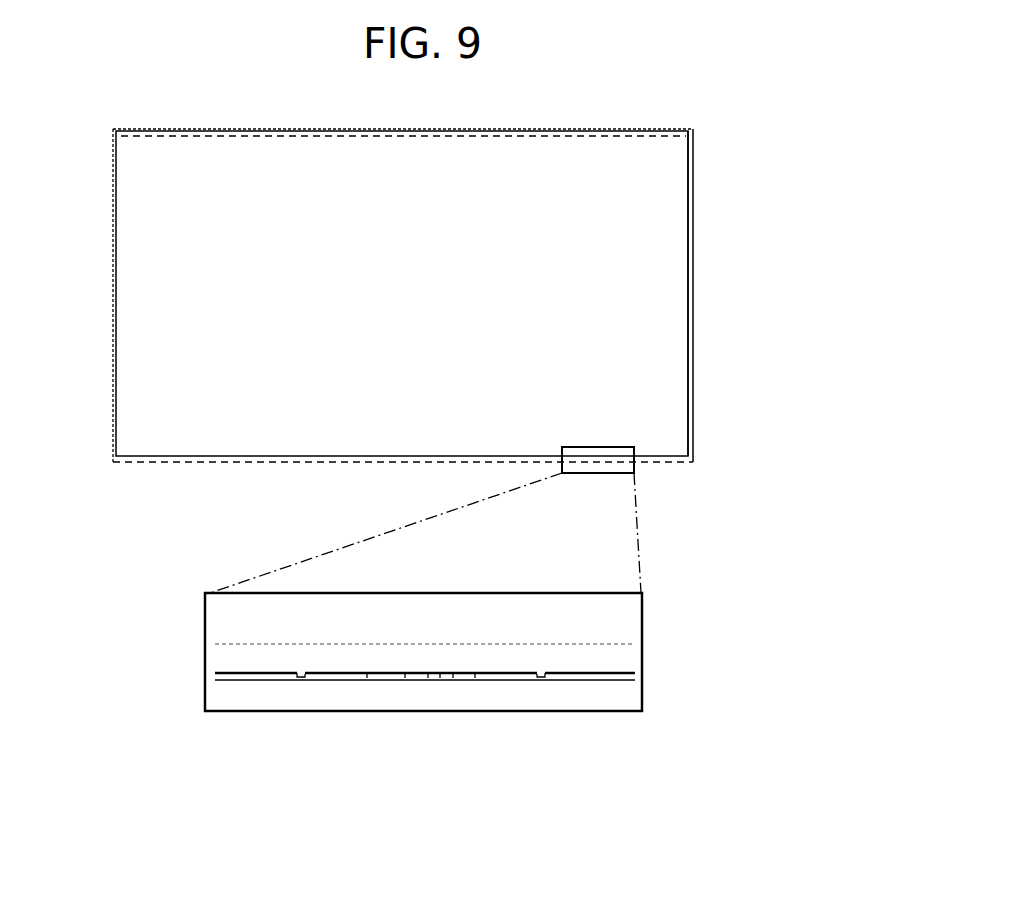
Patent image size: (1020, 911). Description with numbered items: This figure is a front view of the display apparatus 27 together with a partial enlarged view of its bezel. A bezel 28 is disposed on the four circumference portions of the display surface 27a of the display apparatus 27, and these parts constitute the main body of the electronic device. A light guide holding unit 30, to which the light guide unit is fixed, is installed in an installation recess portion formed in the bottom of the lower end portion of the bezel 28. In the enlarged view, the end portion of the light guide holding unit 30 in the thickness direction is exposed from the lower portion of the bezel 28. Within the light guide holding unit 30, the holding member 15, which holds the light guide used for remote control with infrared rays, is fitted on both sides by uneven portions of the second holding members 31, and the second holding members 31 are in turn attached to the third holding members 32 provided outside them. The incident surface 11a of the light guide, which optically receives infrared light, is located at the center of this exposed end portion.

The display apparatus 27 is at (599, 124).
The display surface 27a is at (426, 304).
The bezel 28 is at (695, 295).
The light guide holding unit 30 is at (438, 660).
The third holding members 32 is at (335, 680).
The second holding members 31 is at (387, 680).
The holding member 15 is at (417, 680).
The incident surface 11a is at (432, 680).